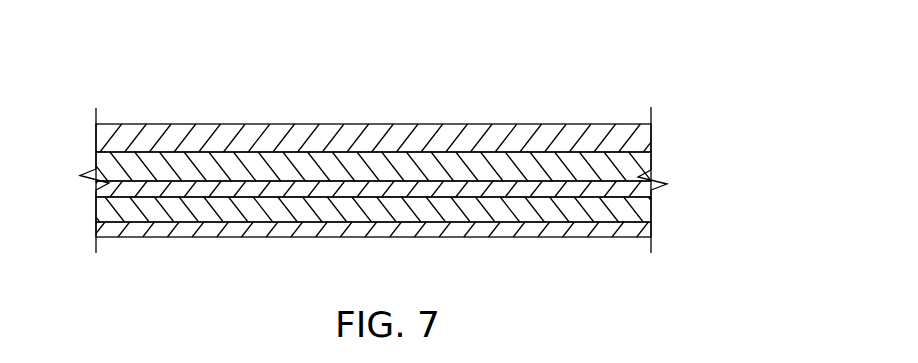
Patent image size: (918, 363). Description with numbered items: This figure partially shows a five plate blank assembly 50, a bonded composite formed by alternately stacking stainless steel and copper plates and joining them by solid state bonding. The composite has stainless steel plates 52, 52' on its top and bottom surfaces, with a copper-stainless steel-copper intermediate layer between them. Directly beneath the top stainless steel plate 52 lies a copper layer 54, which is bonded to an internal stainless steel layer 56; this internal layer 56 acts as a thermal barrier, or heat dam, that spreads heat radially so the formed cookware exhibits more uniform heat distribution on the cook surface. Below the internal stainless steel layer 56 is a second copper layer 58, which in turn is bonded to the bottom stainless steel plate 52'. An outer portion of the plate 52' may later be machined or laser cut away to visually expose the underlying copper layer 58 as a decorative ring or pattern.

The five plate blank assembly 50 is at (688, 174).
The stainless steel plate 52 is at (372, 107).
The copper layer 54 is at (93, 160).
The internal stainless steel layer 56 is at (93, 190).
The copper layer 58 is at (93, 208).
The stainless steel plate 52' is at (373, 262).